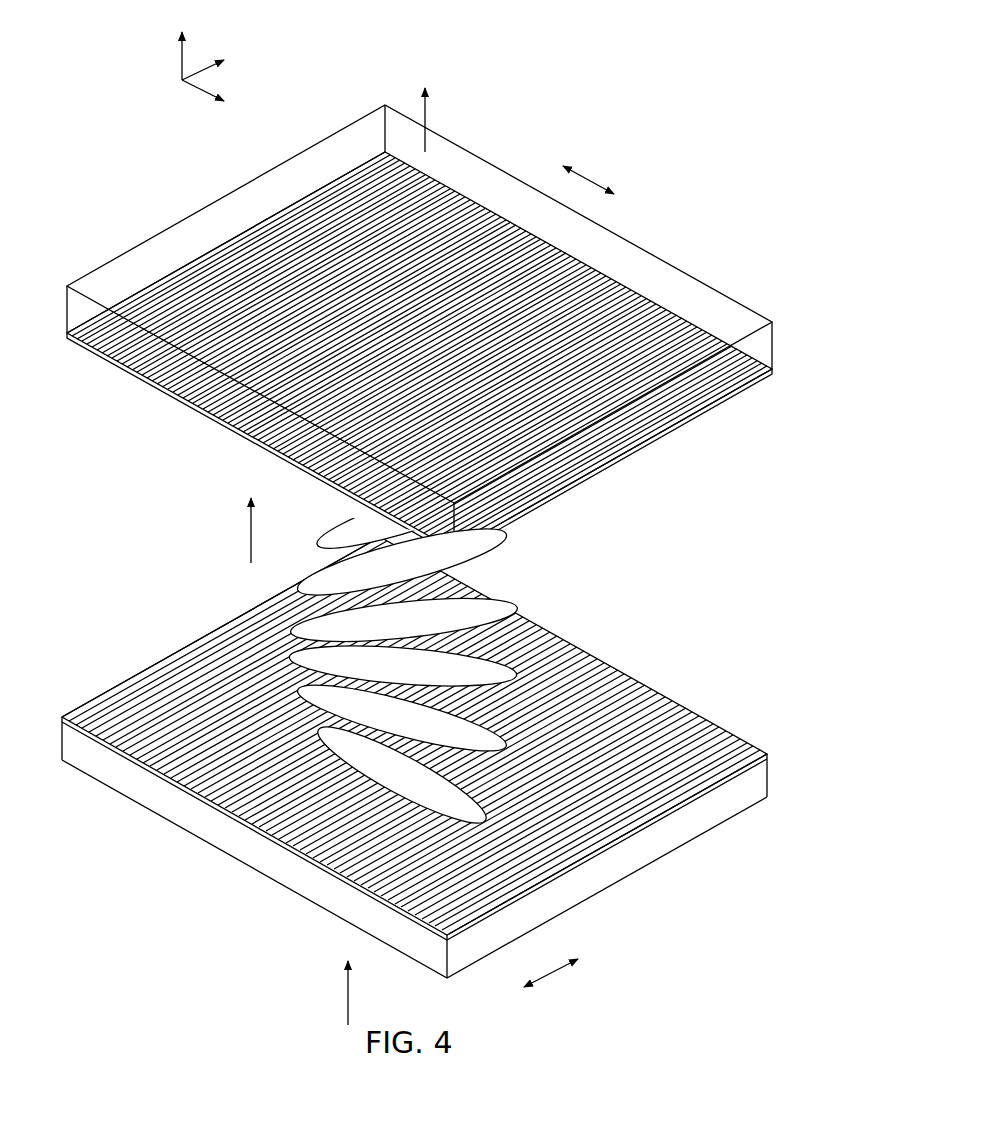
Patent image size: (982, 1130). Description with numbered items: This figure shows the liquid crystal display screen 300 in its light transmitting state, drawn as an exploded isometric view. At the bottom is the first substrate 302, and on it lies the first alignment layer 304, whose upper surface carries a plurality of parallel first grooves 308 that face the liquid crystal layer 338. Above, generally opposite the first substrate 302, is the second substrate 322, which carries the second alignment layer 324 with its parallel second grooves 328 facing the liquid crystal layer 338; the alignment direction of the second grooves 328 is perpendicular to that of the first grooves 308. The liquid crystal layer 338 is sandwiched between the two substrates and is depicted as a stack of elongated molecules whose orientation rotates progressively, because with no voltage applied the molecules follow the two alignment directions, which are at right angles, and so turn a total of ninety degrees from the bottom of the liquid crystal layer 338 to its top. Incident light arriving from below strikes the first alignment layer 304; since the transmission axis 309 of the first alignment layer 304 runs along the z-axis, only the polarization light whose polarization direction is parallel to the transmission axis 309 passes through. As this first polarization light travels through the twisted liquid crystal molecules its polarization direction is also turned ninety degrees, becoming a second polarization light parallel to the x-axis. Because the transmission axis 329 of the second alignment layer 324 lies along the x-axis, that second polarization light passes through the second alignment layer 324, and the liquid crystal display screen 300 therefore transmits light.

The liquid crystal display screen 300 is at (394, 26).
The first substrate 302 is at (583, 883).
The first alignment layer 304 is at (766, 757).
The first grooves 308 is at (624, 705).
The transmission axis of the first alignment layer 309 is at (558, 980).
The second substrate 322 is at (80, 315).
The second alignment layer 324 is at (147, 385).
The second grooves 328 is at (220, 413).
The transmission axis of the second alignment layer 329 is at (595, 174).
The liquid crystal layer 338 is at (486, 541).